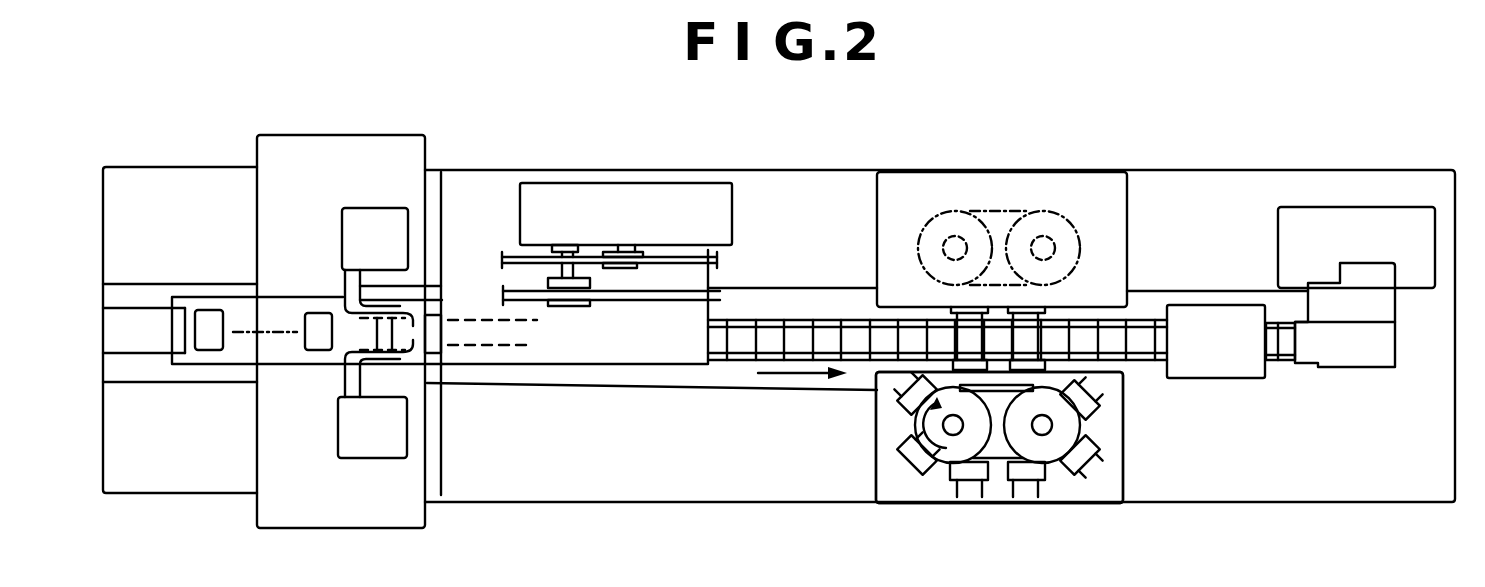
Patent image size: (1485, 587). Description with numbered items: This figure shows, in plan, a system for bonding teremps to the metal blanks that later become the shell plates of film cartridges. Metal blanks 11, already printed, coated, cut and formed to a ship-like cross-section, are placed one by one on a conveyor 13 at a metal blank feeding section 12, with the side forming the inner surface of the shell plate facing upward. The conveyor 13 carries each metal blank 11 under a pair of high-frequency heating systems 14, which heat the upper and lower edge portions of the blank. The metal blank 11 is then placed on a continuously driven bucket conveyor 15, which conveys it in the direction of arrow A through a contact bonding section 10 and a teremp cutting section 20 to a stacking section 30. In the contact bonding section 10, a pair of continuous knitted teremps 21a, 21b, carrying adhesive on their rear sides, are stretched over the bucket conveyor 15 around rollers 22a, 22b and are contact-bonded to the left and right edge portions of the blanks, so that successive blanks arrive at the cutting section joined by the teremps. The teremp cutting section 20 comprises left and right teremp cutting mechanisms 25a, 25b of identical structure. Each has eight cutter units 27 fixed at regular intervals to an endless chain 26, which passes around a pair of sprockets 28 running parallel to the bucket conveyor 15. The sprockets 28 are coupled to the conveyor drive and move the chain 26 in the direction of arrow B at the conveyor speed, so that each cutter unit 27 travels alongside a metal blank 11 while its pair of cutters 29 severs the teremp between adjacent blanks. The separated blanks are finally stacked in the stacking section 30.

The contact bonding section 10 is at (602, 374).
The metal blank 11 is at (210, 317).
The metal blank feeding section 12 is at (135, 323).
The conveyor 13 is at (267, 312).
The high-frequency heating system 14 is at (342, 308).
The bucket conveyor 15 is at (477, 350).
The teremp cutting section 20 is at (994, 530).
The teremp 21a is at (658, 303).
The teremp 21b is at (683, 250).
The roller 22a is at (573, 306).
The roller 22b is at (645, 250).
The left teremp cutting mechanism 25a is at (900, 505).
The right teremp cutting mechanism 25b is at (1062, 170).
The endless chain 26 is at (990, 210).
The cutter unit 27 is at (1072, 305).
The sprocket 28 is at (920, 232).
The cutter 29 is at (1095, 463).
The stacking section 30 is at (1355, 392).
The conveying direction arrow A is at (806, 375).
The chain running direction arrow B is at (907, 427).